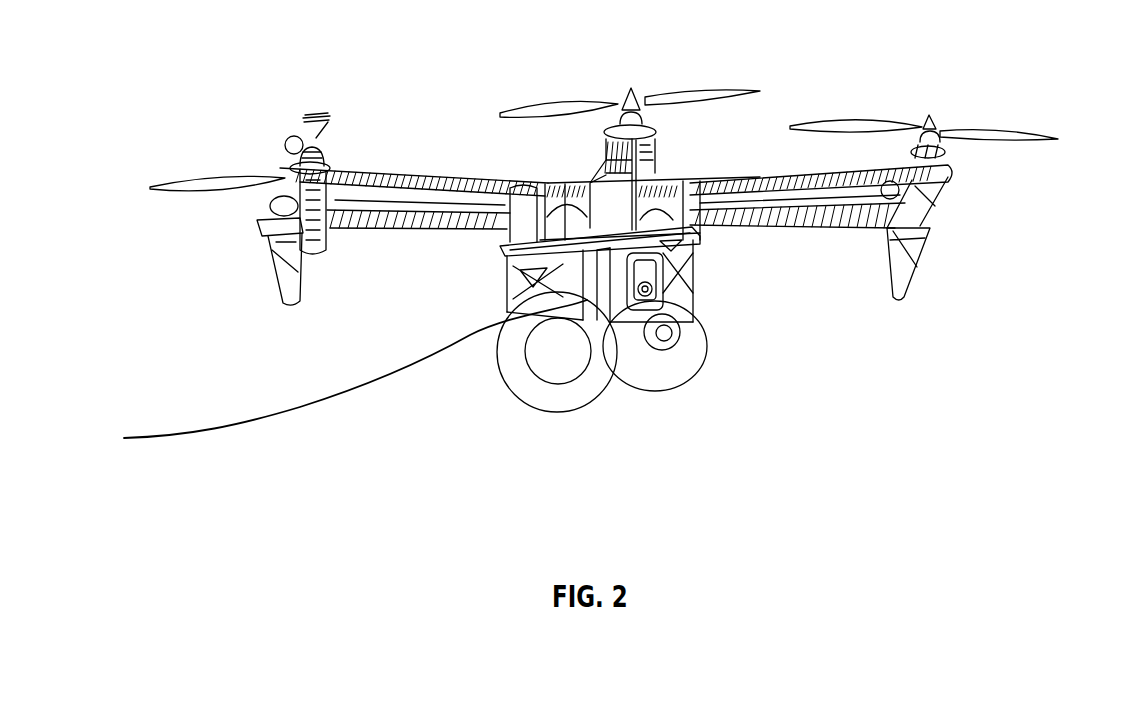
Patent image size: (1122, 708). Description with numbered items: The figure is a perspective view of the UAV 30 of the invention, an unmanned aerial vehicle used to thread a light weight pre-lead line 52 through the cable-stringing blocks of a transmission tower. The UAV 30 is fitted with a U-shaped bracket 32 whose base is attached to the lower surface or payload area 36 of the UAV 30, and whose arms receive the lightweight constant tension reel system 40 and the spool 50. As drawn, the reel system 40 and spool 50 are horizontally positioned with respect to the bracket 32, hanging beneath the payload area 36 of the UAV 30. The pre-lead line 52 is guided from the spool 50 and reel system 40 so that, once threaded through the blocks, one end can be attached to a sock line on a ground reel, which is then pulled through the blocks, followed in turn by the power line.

The UAV 30 is at (466, 120).
The U-shaped bracket 32 is at (727, 298).
The payload area 36 is at (480, 248).
The constant tension reel system 40 is at (689, 336).
The spool 50 is at (581, 410).
The pre-lead line 52 is at (375, 428).